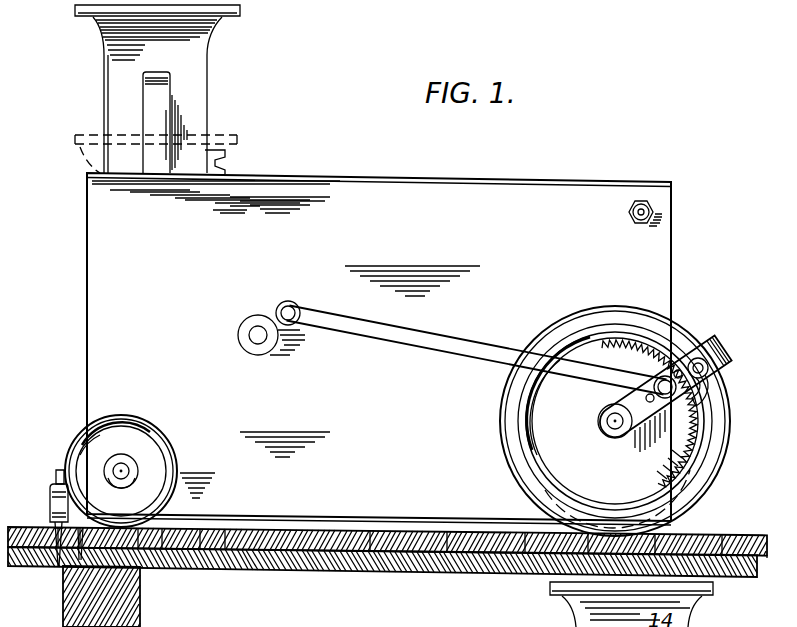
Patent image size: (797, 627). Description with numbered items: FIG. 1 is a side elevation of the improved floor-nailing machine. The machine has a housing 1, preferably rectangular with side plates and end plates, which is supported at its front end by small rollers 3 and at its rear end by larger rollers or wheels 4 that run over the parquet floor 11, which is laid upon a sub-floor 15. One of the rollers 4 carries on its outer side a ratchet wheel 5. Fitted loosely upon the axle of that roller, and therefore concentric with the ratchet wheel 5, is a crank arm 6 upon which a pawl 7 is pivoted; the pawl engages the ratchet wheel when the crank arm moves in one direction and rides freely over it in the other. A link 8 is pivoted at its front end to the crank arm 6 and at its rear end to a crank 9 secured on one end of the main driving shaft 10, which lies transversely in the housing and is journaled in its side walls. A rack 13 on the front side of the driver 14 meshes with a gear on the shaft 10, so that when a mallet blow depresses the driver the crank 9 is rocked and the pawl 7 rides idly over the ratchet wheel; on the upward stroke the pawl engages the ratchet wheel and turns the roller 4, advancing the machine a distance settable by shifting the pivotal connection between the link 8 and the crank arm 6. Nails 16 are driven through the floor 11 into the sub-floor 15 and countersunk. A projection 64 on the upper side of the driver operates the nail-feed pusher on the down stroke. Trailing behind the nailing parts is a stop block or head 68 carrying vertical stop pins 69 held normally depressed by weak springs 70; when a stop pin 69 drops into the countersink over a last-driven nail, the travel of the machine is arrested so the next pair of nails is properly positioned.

The housing 1 is at (512, 192).
The small rollers 3 is at (158, 450).
The larger rollers or wheels 4 is at (718, 440).
The ratchet wheel 5 is at (692, 426).
The crank arm 6 is at (724, 341).
The pawl 7 is at (707, 388).
The link 8 is at (489, 348).
The crank 9 is at (284, 305).
The main driving shaft 10 is at (256, 340).
The floor 11 is at (378, 534).
The rack 13 is at (218, 152).
The driver 14 is at (210, 50).
The sub-floor 15 is at (486, 570).
The nails 16 is at (60, 556).
The projection 64 is at (158, 124).
The stop block or head 68 is at (52, 494).
The stop pins 69 is at (54, 522).
The weak springs 70 is at (58, 472).